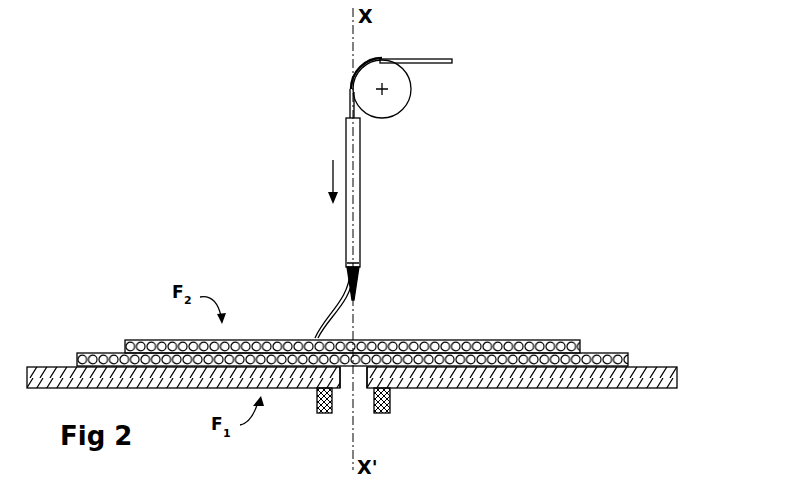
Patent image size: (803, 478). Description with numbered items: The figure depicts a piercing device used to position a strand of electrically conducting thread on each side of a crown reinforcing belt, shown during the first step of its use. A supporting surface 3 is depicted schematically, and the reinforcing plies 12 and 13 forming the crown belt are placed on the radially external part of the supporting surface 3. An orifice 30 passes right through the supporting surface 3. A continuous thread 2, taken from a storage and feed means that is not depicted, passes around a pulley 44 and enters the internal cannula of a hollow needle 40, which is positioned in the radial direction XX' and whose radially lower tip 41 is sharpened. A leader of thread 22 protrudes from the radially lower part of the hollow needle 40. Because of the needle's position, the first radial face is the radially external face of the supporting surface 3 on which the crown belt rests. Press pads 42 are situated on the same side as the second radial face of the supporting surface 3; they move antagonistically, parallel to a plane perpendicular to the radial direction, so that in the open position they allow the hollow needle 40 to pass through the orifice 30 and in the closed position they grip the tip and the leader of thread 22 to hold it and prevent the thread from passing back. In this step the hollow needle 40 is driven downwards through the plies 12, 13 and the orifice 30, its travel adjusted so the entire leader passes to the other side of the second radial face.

The continuous thread 2 is at (424, 64).
The pulley 44 is at (392, 103).
The hollow needle 40 is at (361, 186).
The radially lower tip 41 is at (356, 296).
The leader of thread 22 is at (329, 318).
The reinforcing ply 12 is at (580, 345).
The reinforcing ply 13 is at (628, 360).
The supporting surface 3 is at (677, 378).
The orifice 30 is at (346, 376).
The press pads 42 is at (390, 410).